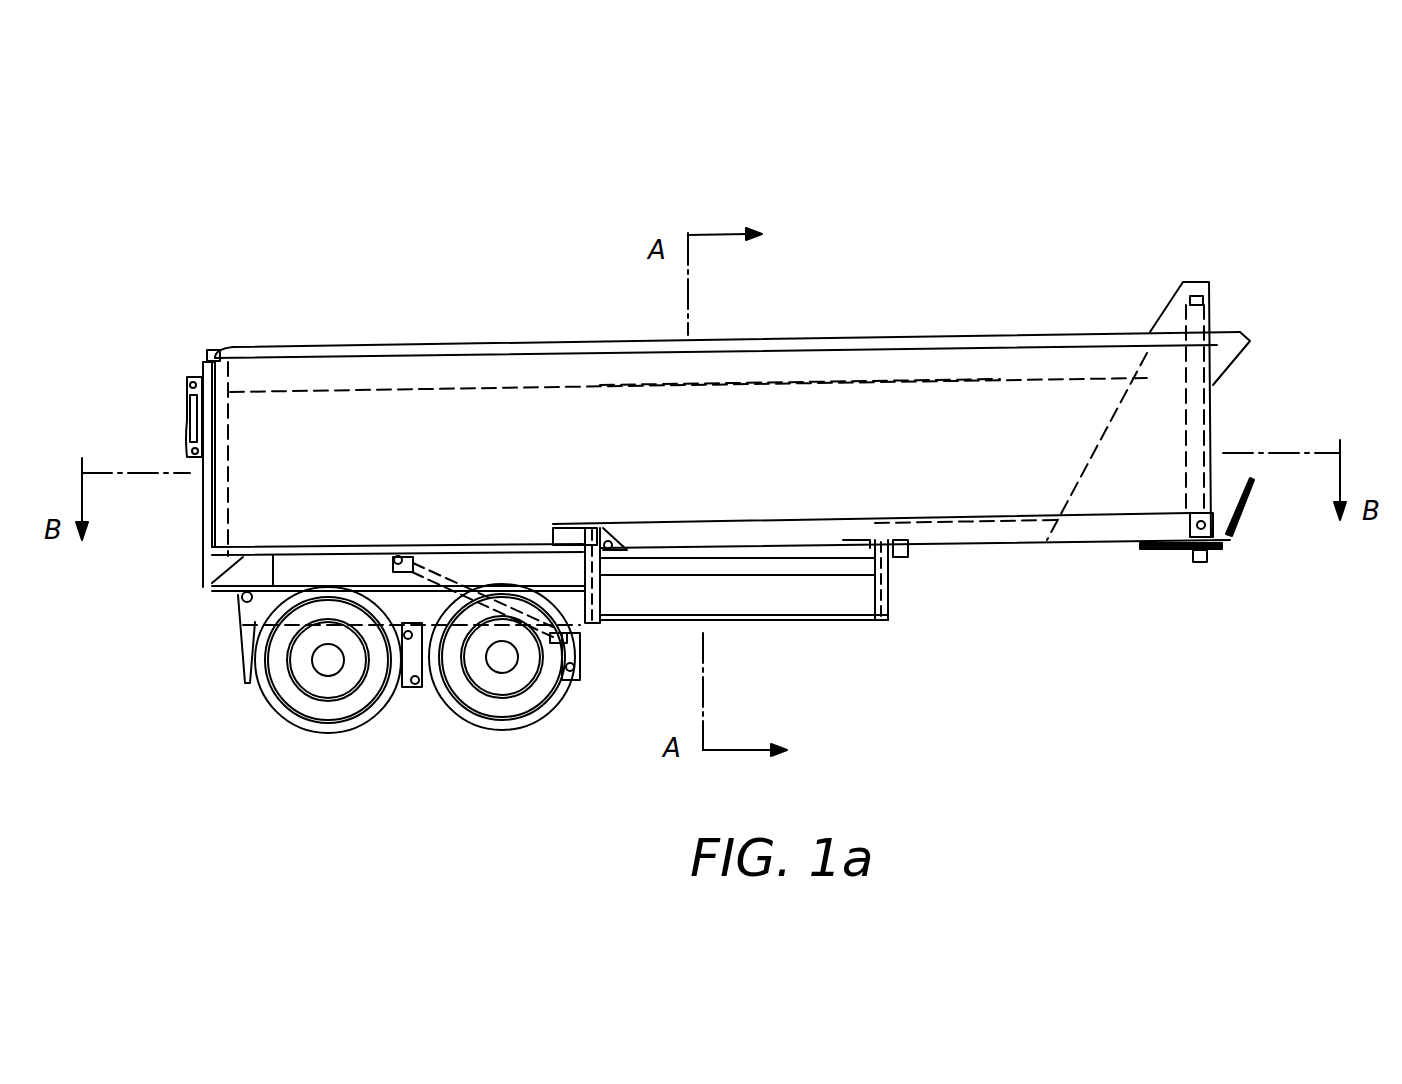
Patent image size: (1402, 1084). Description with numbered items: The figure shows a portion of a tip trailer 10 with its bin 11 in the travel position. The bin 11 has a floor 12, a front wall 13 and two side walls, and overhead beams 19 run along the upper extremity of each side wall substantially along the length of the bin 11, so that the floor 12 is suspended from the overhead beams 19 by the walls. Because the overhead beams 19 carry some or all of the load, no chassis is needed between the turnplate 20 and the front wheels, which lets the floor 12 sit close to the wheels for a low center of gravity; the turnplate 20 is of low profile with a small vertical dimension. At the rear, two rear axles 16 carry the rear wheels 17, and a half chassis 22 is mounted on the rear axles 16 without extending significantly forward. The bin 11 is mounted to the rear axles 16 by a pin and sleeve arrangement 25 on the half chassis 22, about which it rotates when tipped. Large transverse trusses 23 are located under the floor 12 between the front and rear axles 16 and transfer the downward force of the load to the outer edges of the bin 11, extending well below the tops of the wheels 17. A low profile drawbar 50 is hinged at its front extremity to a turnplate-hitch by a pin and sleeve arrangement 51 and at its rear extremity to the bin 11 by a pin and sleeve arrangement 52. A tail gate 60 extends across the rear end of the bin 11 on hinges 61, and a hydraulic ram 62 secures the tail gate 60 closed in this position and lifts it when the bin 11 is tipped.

The tip trailer 10 is at (1128, 220).
The bin 11 is at (852, 453).
The floor 12 is at (493, 553).
The front wall 13 is at (1217, 420).
The rear axles 16 is at (327, 662).
The rear wheels 17 is at (323, 712).
The overhead beams 19 is at (833, 378).
The turnplate 20 is at (1223, 550).
The half chassis 22 is at (352, 560).
The transverse trusses 23 is at (602, 600).
The pin and sleeve arrangement 25 is at (233, 607).
The low profile drawbar 50 is at (800, 540).
The pin and sleeve arrangement 51 is at (1230, 530).
The pin and sleeve arrangement 52 is at (627, 547).
The tail gate 60 is at (203, 517).
The hinges 61 is at (219, 350).
The hydraulic ram 62 is at (187, 410).